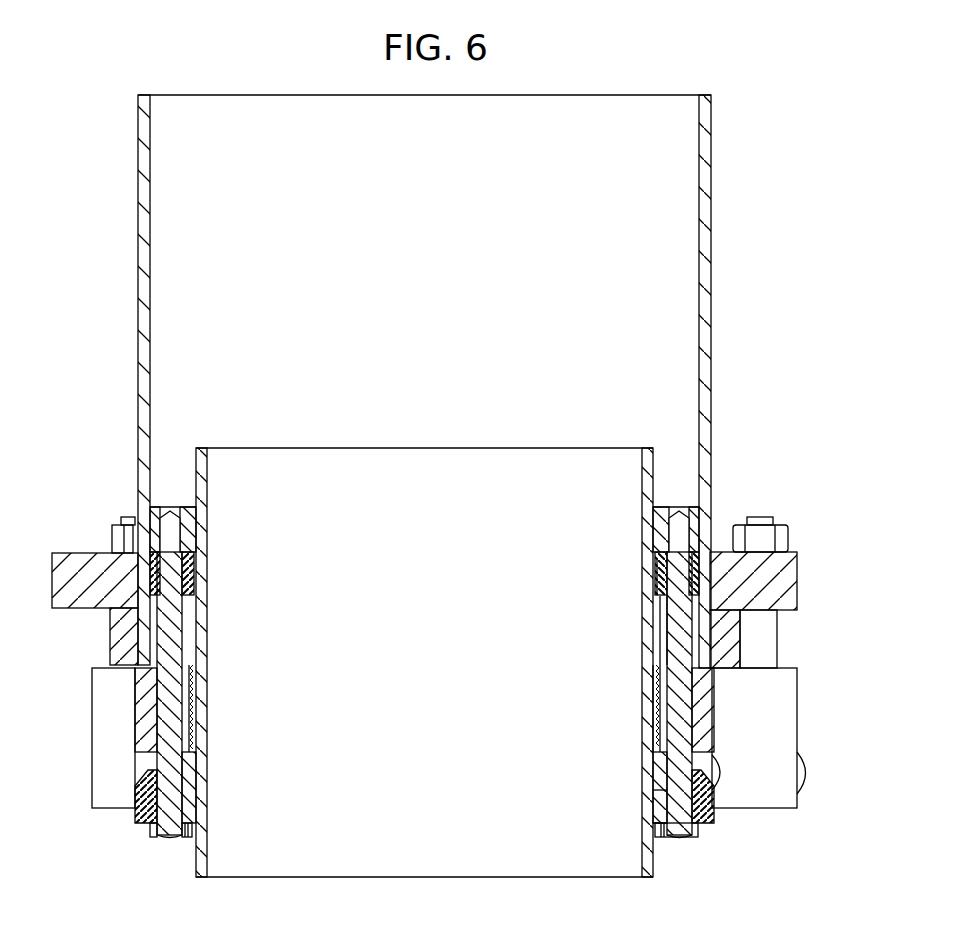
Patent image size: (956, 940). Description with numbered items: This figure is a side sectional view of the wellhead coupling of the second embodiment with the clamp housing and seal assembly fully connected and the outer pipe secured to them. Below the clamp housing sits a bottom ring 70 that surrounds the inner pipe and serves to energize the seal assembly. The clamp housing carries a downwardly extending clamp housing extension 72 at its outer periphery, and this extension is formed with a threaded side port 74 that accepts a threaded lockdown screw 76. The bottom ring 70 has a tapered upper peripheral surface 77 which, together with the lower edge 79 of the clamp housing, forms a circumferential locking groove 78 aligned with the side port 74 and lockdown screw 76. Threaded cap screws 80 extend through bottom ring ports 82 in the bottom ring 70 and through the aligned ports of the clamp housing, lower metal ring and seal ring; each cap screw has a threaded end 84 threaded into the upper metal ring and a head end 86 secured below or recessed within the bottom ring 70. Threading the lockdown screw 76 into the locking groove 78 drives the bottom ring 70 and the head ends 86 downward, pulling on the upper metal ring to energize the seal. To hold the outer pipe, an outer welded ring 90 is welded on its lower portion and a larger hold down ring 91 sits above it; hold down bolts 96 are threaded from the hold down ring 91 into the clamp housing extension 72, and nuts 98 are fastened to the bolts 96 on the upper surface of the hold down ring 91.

The bottom ring 70 is at (714, 815).
The clamp housing extension 72 is at (790, 702).
The threaded side port 74 is at (722, 772).
The lockdown screw 76 is at (808, 776).
The tapered upper peripheral surface 77 is at (660, 792).
The circumferential locking groove 78 is at (665, 762).
The lower edge of the clamp housing 79 is at (662, 718).
The threaded cap screw 80 is at (670, 692).
The bottom ring port 82 is at (660, 824).
The threaded end 84 is at (698, 527).
The head end 86 is at (680, 837).
The outer welded ring 90 is at (725, 624).
The hold down ring 91 is at (792, 572).
The hold down bolt 96 is at (778, 663).
The nut 98 is at (780, 538).